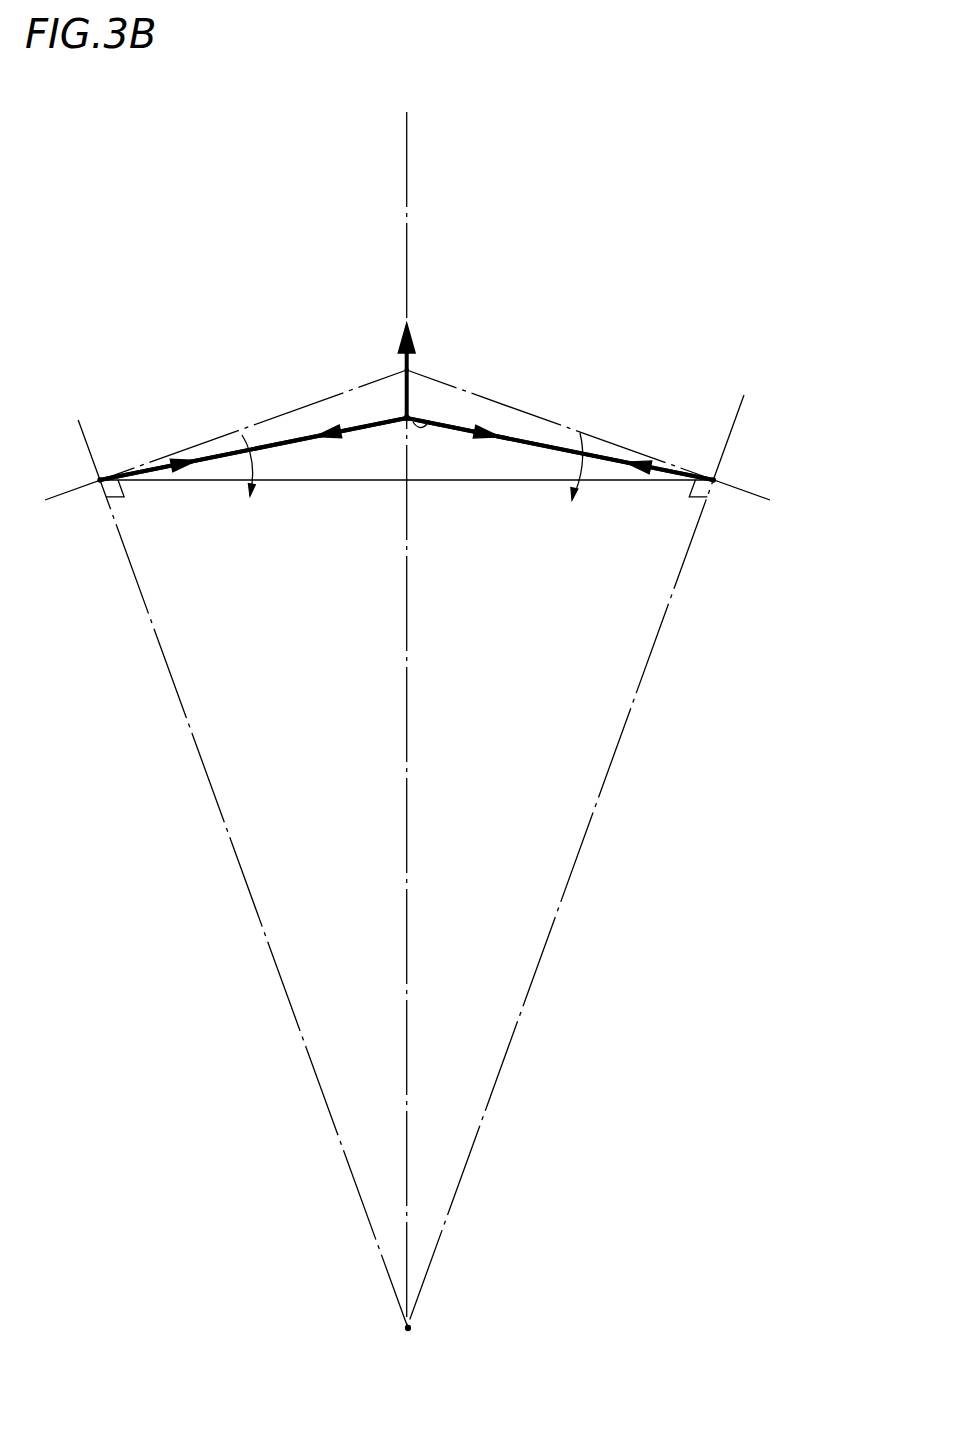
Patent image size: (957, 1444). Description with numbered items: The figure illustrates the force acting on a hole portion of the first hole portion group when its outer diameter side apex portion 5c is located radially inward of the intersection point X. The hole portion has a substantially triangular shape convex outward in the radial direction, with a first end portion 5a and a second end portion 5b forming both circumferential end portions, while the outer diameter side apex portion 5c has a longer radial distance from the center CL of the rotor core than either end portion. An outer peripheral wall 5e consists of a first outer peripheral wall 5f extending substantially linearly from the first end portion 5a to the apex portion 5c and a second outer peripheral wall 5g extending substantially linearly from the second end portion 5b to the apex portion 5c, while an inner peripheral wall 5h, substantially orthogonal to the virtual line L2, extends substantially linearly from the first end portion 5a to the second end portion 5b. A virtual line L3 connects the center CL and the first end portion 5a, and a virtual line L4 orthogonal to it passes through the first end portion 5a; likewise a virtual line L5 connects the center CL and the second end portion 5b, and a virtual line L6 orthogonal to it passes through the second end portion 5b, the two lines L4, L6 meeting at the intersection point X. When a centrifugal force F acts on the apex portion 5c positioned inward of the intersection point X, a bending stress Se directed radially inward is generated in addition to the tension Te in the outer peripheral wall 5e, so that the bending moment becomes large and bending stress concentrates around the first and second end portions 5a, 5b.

The first end portion 5a is at (112, 487).
The second end portion 5b is at (707, 472).
The outer diameter side apex portion 5c is at (437, 420).
The outer peripheral wall 5e is at (406, 410).
The first outer peripheral wall 5f is at (275, 452).
The second outer peripheral wall 5g is at (545, 452).
The inner peripheral wall 5h is at (433, 477).
The tension Te is at (156, 466).
The bending stress Se is at (413, 484).
The centrifugal force F is at (402, 362).
The intersection point X is at (412, 367).
The virtual line L2 is at (410, 704).
The virtual line L3 is at (236, 863).
The virtual line L4 is at (208, 444).
The virtual line L5 is at (582, 849).
The virtual line L6 is at (608, 444).
The center CL is at (425, 1335).